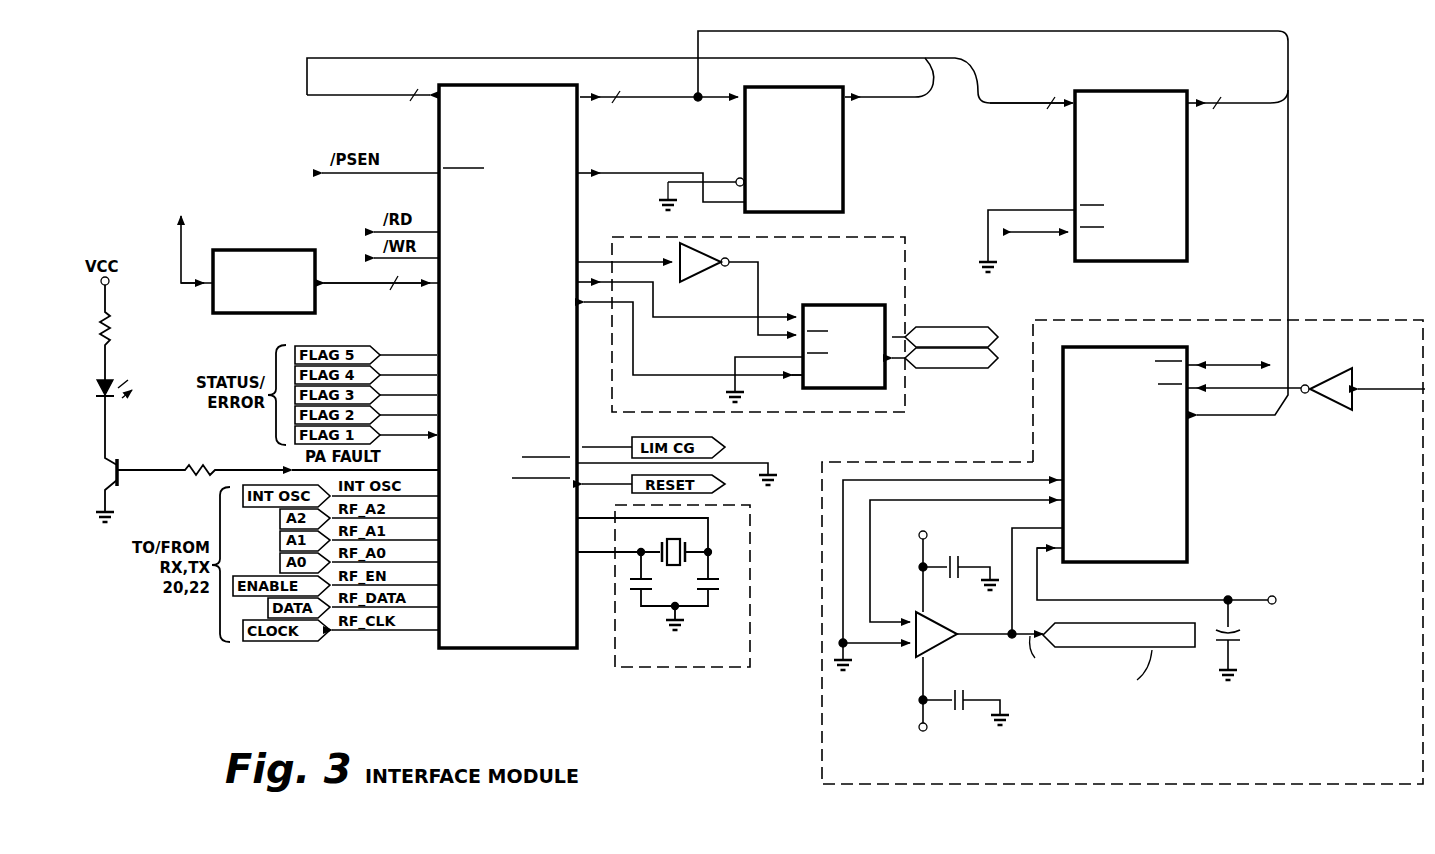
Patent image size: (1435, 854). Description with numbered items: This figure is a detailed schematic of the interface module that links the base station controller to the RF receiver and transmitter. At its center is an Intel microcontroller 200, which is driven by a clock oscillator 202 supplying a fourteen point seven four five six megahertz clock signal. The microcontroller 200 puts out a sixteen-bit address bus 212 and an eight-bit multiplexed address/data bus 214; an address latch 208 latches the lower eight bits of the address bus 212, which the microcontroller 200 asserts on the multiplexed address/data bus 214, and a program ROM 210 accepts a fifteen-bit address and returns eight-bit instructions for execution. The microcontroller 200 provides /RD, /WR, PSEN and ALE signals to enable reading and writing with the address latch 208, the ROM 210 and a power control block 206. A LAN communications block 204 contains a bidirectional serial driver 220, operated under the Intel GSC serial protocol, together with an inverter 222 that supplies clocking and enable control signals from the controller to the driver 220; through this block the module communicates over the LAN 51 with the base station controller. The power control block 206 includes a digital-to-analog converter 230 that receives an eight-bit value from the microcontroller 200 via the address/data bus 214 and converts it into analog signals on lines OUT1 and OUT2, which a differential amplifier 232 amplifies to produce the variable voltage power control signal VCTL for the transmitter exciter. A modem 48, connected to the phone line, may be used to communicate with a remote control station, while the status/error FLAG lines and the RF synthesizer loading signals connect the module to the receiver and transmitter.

The modem 48 is at (255, 250).
The LAN 51 is at (898, 362).
The microcontroller 200 is at (557, 650).
The clock oscillator 202 is at (740, 668).
The LAN communications block 204 is at (779, 322).
The power control block 206 is at (1123, 573).
The address latch 208 is at (845, 135).
The program ROM 210 is at (1189, 207).
The address bus 212 is at (580, 58).
The multiplexed address/data bus 214 is at (1035, 31).
The bidirectional RS-485 serial driver 220 is at (860, 306).
The inverter 222 is at (703, 272).
The digital-to-analog converter 230 is at (1188, 523).
The differential amplifier 232 is at (930, 620).